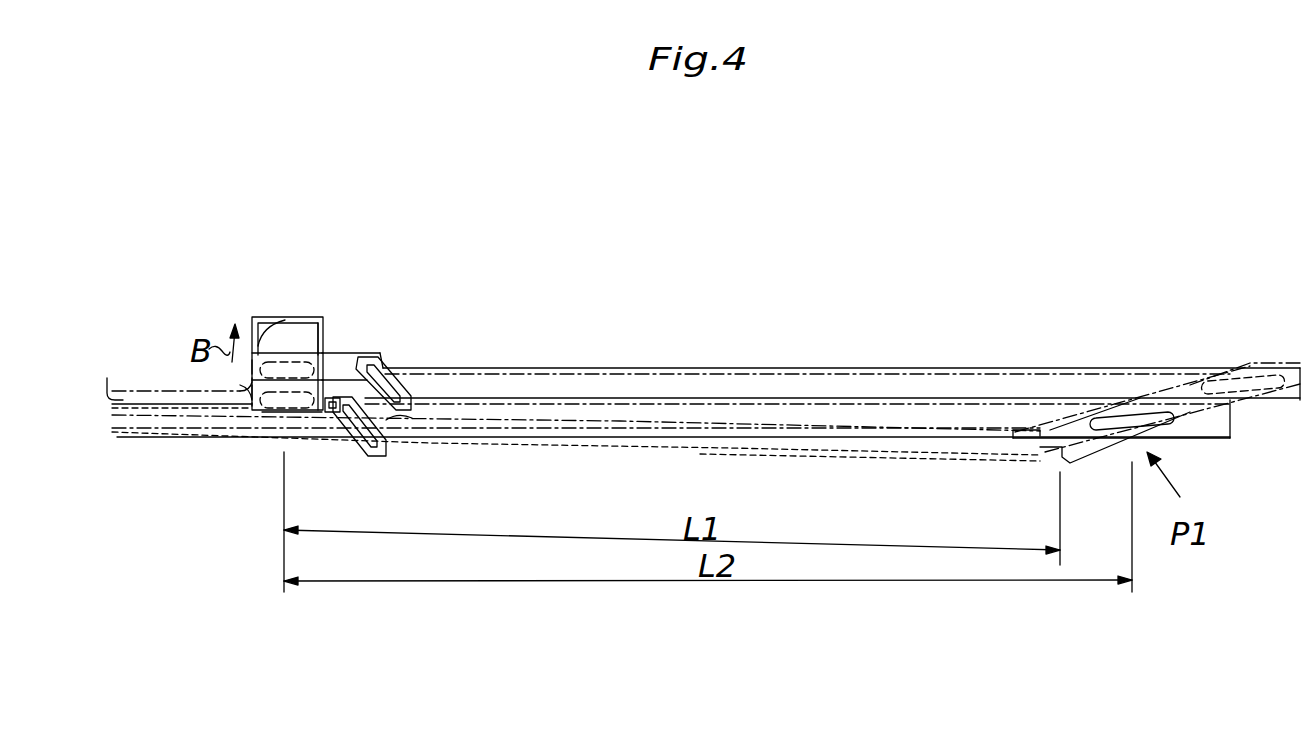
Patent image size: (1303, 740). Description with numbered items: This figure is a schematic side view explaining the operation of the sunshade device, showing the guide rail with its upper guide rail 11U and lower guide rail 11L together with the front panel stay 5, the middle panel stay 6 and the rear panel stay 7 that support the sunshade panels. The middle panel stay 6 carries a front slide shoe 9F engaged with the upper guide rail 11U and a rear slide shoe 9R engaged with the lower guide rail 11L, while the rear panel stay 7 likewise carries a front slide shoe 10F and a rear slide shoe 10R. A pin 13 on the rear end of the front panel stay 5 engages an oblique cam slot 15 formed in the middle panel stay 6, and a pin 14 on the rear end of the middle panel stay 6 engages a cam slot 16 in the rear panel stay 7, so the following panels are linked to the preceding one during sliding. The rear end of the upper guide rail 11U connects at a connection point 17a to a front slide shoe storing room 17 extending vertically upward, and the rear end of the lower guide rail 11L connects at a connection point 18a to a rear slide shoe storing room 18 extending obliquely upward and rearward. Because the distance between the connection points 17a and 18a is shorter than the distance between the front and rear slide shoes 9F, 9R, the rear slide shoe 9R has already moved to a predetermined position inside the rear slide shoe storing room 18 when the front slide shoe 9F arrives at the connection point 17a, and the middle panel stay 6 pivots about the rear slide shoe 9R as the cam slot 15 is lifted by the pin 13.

The front panel stay 5 is at (171, 439).
The middle panel stay 6 is at (797, 430).
The rear panel stay 7 is at (789, 368).
The front slide shoe 9F is at (262, 412).
The rear slide shoe 9R is at (1110, 430).
The front slide shoe 10F is at (300, 352).
The rear slide shoe 10R is at (1273, 378).
The upper guide rail 11U is at (108, 378).
The lower guide rail 11L is at (923, 447).
The pin 13 is at (338, 396).
The pin 14 is at (1225, 410).
The cam slot 15 is at (412, 418).
The cam slot 16 is at (405, 364).
The front slide shoe storing room 17 is at (285, 318).
The connection point 17a is at (240, 385).
The rear slide shoe storing room 18 is at (1180, 413).
The connection point 18a is at (1043, 447).